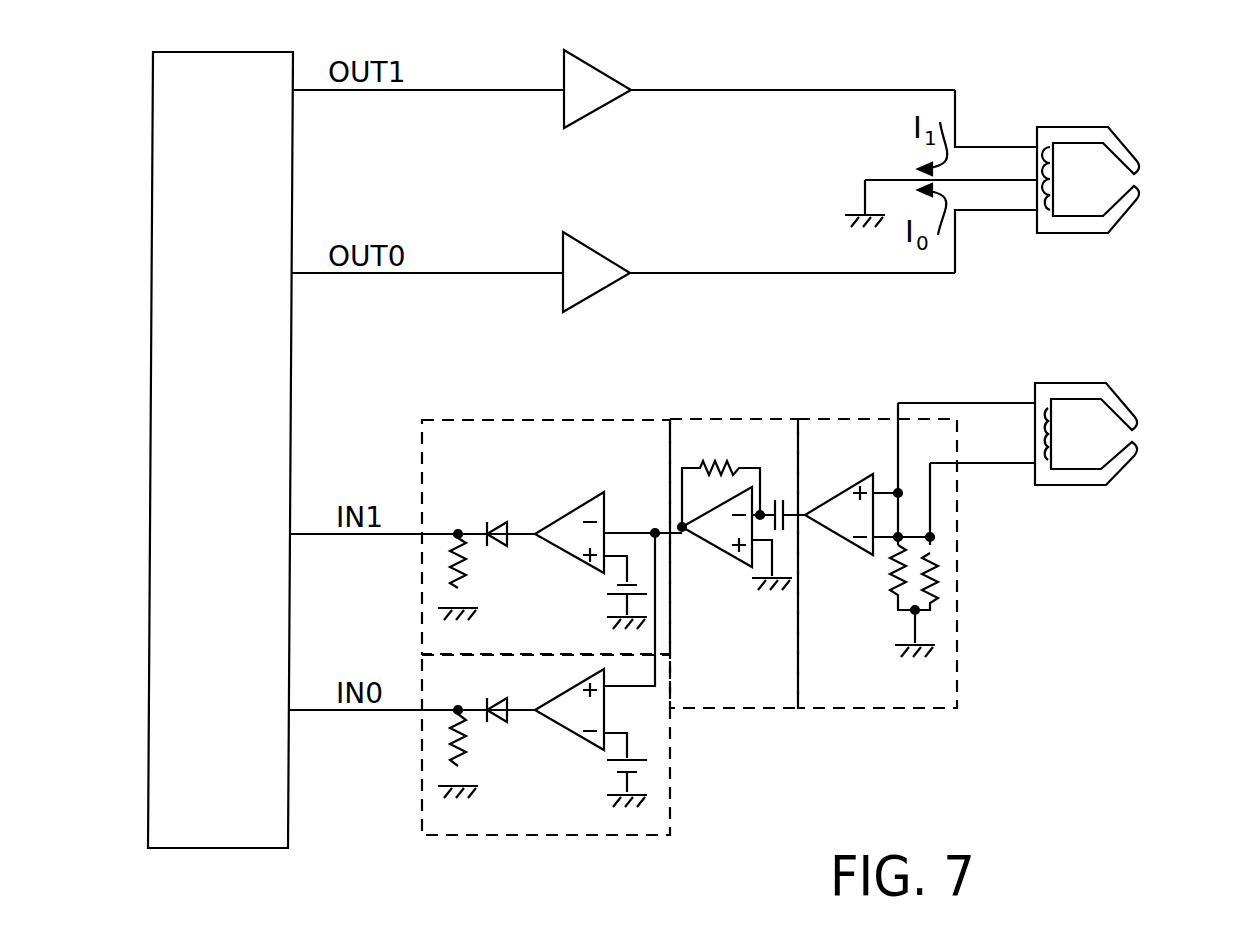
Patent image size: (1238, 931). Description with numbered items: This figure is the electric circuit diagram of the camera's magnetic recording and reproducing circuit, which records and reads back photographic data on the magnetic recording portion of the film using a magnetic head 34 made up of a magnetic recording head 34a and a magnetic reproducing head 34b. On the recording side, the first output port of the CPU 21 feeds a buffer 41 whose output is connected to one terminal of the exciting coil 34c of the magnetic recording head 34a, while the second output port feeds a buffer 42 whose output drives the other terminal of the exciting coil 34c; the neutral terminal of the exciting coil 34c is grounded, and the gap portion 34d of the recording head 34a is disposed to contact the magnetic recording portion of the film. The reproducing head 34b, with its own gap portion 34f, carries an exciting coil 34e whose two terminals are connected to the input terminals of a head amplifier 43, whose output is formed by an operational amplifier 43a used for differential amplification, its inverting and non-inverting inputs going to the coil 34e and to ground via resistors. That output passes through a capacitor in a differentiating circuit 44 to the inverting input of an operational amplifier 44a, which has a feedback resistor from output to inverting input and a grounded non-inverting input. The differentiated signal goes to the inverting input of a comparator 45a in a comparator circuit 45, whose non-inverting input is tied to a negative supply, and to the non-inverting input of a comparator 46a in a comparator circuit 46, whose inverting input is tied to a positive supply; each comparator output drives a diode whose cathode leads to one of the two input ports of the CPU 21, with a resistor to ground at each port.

The CPU 21 is at (210, 58).
The buffer 41 is at (604, 86).
The buffer 42 is at (604, 269).
The magnetic head 34 is at (1094, 308).
The magnetic recording head 34a is at (1094, 159).
The magnetic reproducing head 34b is at (1091, 457).
The exciting coil 34c is at (1033, 162).
The gap portion 34d is at (1132, 176).
The exciting coil 34e is at (1036, 444).
The secondary core gap 34f is at (1130, 437).
The head amplifier 43 is at (877, 542).
The operational amplifier 43a is at (842, 534).
The differentiating circuit 44 is at (737, 542).
The operational amplifier 44a is at (714, 545).
The comparator circuit 45 is at (486, 531).
The comparator 45a is at (562, 526).
The comparator circuit 46 is at (479, 770).
The comparator 46a is at (569, 718).